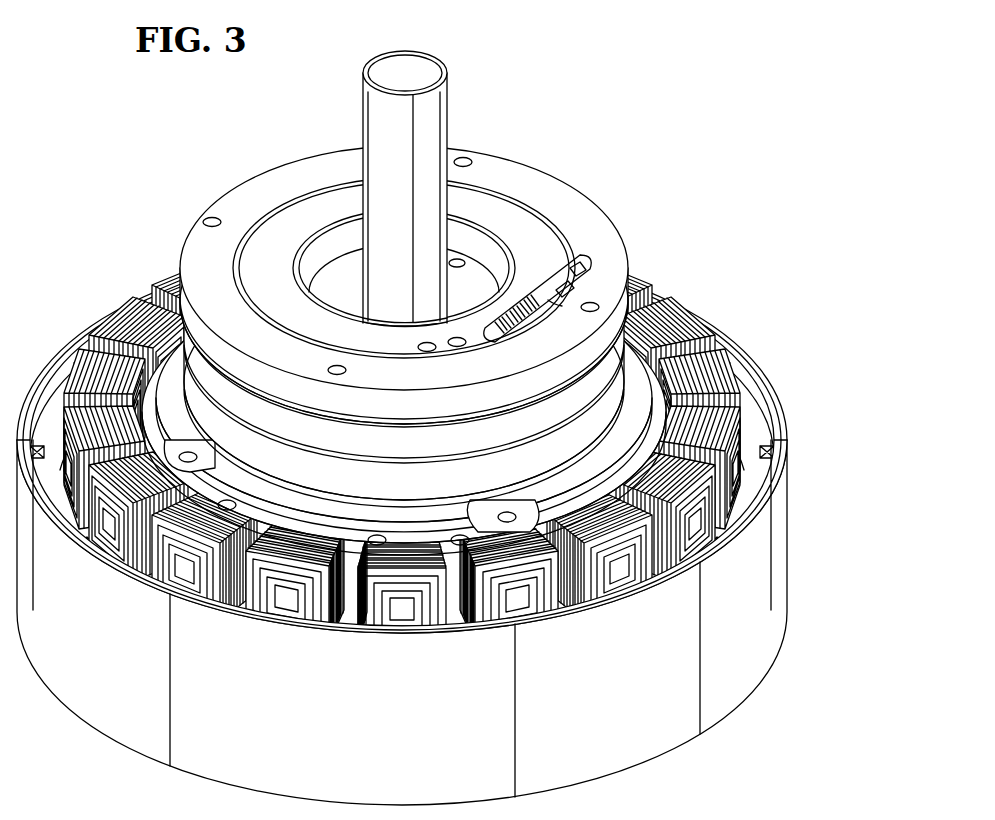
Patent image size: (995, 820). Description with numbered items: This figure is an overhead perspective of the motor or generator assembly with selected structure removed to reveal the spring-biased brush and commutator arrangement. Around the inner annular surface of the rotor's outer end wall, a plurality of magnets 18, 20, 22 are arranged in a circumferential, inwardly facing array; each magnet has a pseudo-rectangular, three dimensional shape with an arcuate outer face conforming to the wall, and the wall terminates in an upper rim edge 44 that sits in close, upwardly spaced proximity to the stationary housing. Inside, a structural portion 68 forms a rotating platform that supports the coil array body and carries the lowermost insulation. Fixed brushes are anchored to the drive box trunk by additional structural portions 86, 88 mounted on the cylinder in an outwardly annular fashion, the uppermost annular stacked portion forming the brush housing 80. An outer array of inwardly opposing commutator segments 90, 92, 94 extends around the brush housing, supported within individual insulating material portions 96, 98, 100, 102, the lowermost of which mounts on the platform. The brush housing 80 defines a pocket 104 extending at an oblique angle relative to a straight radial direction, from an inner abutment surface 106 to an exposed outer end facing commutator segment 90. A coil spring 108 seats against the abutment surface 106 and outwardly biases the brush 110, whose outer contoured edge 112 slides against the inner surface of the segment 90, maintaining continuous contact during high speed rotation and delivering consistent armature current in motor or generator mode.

The magnet 18 is at (758, 422).
The magnet 20 is at (740, 358).
The magnet 22 is at (600, 285).
The upper rim edge 44 is at (706, 302).
The structural portion 68 is at (330, 540).
The brush housing 80 is at (465, 213).
The structural portion 86 is at (475, 262).
The structural portion 88 is at (348, 297).
The commutator segment 90 is at (450, 412).
The commutator segment 92 is at (450, 450).
The commutator segment 94 is at (450, 488).
The insulating material portion 96 is at (200, 246).
The insulating material portion 98 is at (283, 405).
The insulating material portion 100 is at (323, 463).
The insulating material portion 102 is at (360, 527).
The pocket 104 is at (540, 260).
The abutment surface 106 is at (462, 348).
The coil spring 108 is at (540, 328).
The pin 110 is at (570, 292).
The outer contoured edge 112 is at (582, 270).